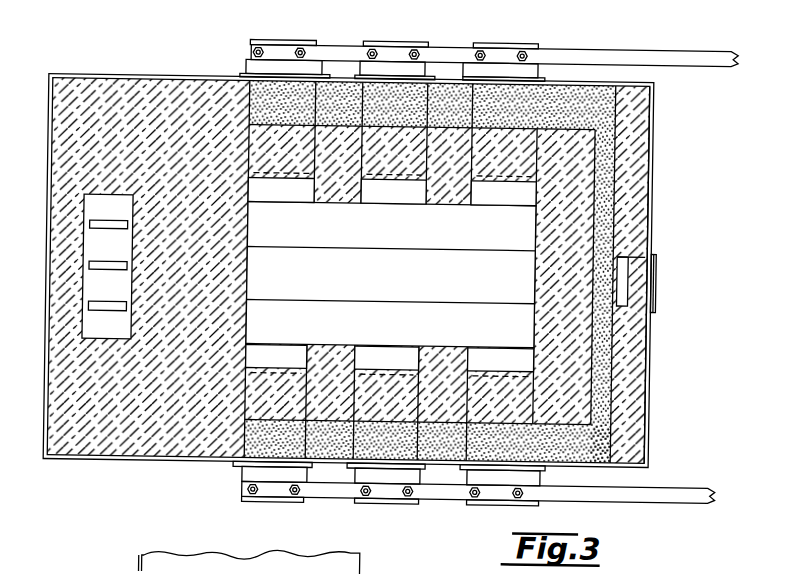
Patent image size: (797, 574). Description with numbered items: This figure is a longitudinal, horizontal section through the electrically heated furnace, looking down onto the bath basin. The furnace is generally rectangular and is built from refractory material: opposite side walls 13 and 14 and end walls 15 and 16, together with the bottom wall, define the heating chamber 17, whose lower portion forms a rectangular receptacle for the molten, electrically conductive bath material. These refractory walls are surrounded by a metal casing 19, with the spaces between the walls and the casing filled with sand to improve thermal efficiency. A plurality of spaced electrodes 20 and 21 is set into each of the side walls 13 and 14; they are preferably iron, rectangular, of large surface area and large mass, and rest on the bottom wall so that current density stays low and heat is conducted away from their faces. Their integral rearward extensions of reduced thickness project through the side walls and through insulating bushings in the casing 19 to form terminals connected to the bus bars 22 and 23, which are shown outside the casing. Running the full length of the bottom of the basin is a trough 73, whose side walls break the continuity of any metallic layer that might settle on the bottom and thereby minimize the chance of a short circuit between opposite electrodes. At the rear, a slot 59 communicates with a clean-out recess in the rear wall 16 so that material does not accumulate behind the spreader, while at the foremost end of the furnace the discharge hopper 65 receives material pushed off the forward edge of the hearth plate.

The side wall 13 is at (327, 90).
The side wall 14 is at (336, 450).
The end wall 15 is at (64, 408).
The end wall 16 is at (639, 336).
The heating chamber 17 is at (404, 291).
The metal casing 19 is at (80, 78).
The electrodes 20 is at (280, 347).
The electrodes 21 is at (279, 203).
The bus bar 22 is at (455, 489).
The bus bar 23 is at (559, 46).
The slot 59 is at (622, 274).
The discharge hopper 65 is at (107, 266).
The trough 73 is at (462, 273).